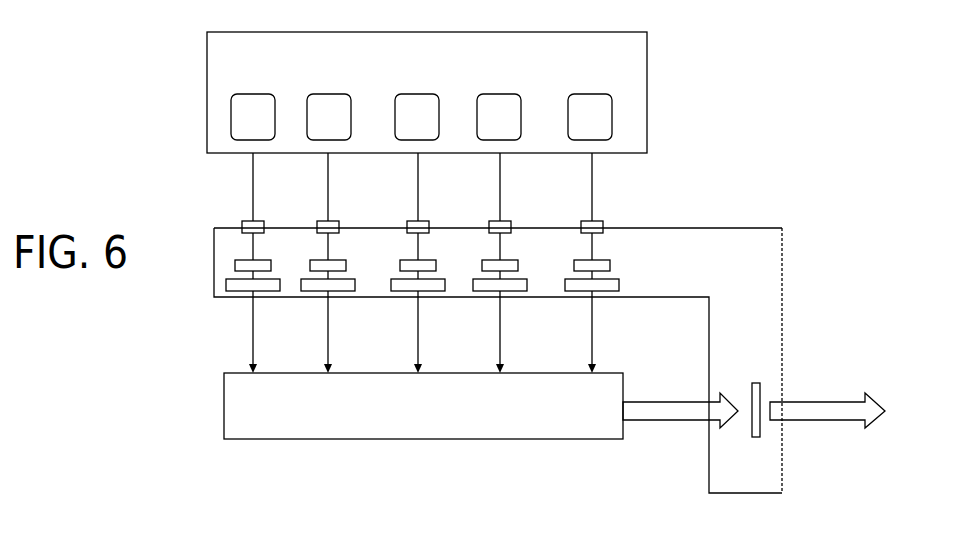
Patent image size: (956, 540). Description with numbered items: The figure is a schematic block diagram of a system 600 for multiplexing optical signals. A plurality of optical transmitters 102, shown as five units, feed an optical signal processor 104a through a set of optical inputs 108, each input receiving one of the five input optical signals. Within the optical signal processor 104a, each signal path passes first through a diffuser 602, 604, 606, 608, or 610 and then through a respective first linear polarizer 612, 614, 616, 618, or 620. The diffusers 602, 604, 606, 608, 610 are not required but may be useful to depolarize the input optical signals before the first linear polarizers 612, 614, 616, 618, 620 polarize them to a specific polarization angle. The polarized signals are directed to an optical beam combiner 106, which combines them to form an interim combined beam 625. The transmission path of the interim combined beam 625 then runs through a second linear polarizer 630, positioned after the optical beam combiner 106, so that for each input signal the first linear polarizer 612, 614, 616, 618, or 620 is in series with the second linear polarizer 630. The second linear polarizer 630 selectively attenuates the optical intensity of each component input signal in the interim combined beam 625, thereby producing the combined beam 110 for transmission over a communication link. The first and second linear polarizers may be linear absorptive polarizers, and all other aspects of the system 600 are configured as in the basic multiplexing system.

The system for multiplexing optical signals 600 is at (738, 96).
The optical transmitters 102 is at (648, 57).
The optical signal processor 104a is at (782, 228).
The optical beam combiner 106 is at (625, 380).
The optical inputs 108 is at (257, 222).
The combined beam 110 is at (822, 420).
The diffuser 602 is at (300, 252).
The diffuser 604 is at (375, 252).
The diffuser 606 is at (465, 252).
The diffuser 608 is at (547, 252).
The diffuser 610 is at (639, 252).
The first linear polarizer 612 is at (238, 297).
The first linear polarizer 614 is at (318, 297).
The first linear polarizer 616 is at (403, 297).
The first linear polarizer 618 is at (485, 297).
The first linear polarizer 620 is at (577, 297).
The interim combined beam 625 is at (672, 420).
The second linear polarizer 630 is at (758, 383).